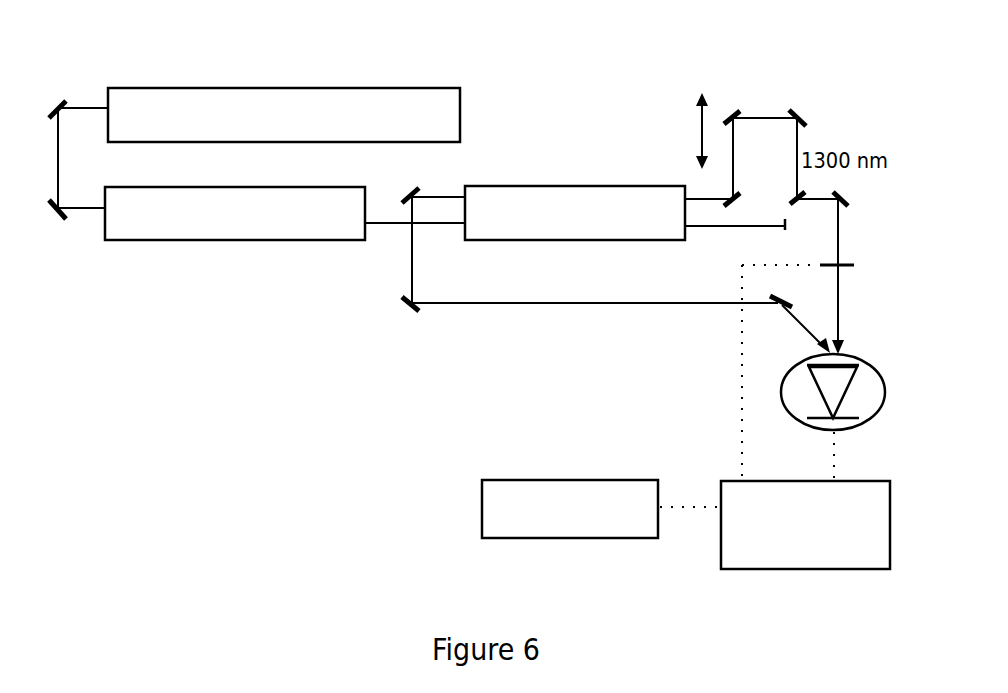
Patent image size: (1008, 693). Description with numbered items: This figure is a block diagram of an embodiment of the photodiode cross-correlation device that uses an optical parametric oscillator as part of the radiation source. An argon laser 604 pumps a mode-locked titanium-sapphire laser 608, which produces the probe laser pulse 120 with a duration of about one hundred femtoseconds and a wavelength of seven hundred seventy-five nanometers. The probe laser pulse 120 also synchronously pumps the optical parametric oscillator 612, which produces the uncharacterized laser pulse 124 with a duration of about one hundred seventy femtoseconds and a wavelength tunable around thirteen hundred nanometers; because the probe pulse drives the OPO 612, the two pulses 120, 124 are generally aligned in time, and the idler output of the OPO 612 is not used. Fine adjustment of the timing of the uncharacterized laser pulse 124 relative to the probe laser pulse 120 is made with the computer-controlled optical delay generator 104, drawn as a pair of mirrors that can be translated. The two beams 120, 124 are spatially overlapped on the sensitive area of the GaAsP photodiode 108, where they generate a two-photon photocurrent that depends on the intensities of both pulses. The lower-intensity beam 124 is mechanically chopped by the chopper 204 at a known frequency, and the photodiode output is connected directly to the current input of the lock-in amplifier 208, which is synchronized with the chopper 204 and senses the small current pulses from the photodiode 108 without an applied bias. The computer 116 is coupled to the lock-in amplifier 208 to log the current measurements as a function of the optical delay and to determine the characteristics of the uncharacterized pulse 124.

The optical delay generator 104 is at (806, 112).
The radiation detector 108 is at (867, 380).
The computer 116 is at (585, 530).
The probe radiation pulse 120 is at (543, 305).
The uncharacterized radiation pulse 124 is at (840, 310).
The chopper 204 is at (854, 265).
The photocurrent sensor 208 is at (793, 558).
The argon laser 604 is at (386, 96).
The titanium-sapphire laser 608 is at (268, 233).
The optical parametric oscillator 612 is at (625, 190).